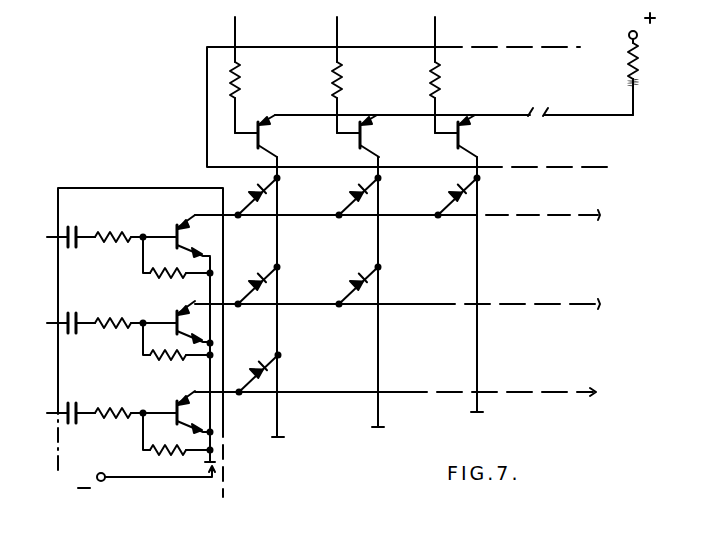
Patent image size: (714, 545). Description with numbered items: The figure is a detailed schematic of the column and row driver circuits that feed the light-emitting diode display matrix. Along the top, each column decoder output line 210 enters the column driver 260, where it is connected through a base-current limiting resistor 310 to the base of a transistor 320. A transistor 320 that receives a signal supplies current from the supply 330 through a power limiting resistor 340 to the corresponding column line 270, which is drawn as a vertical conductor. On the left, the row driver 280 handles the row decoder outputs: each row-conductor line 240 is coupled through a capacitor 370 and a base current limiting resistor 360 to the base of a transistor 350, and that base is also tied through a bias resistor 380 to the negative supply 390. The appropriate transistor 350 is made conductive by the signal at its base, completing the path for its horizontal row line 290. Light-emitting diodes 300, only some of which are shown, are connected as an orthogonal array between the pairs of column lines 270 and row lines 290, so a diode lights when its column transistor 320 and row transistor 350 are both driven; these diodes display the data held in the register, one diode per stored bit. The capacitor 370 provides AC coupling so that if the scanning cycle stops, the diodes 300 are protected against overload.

The output line 210 is at (448, 25).
The row-conductor line 240 is at (55, 412).
The column driver 260 is at (207, 100).
The column line 270 is at (379, 238).
The row driver 280 is at (103, 186).
The row line 290 is at (297, 307).
The light-emitting diode 300 is at (256, 283).
The base-current limiting resistor 310 is at (242, 80).
The transistor 320 is at (481, 134).
The supply 330 is at (633, 31).
The power limiting resistor 340 is at (626, 61).
The transistor 350 is at (182, 409).
The base current limiting resistor 360 is at (108, 422).
The capacitor 370 is at (70, 337).
The bias resistor 380 is at (178, 346).
The negative supply 390 is at (104, 481).